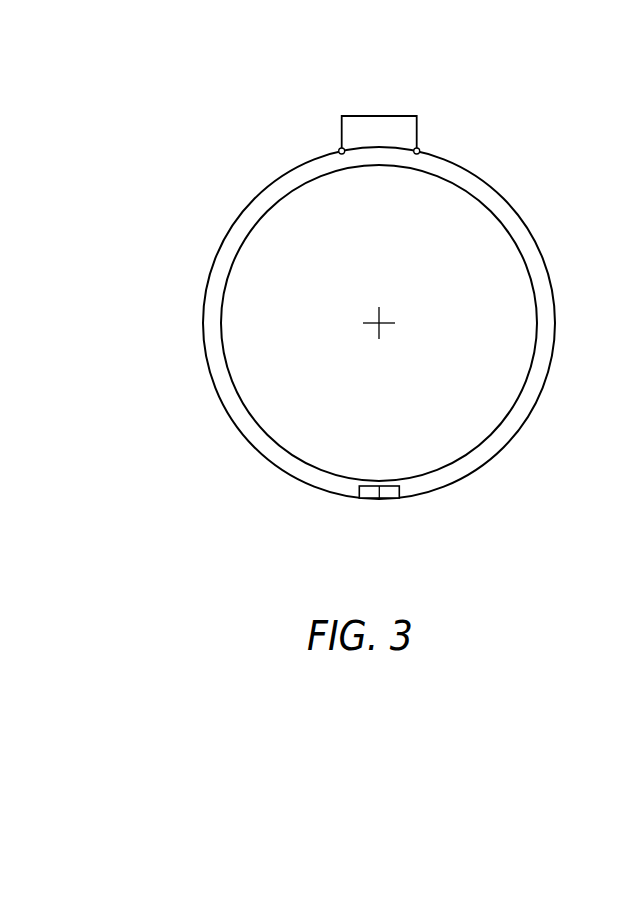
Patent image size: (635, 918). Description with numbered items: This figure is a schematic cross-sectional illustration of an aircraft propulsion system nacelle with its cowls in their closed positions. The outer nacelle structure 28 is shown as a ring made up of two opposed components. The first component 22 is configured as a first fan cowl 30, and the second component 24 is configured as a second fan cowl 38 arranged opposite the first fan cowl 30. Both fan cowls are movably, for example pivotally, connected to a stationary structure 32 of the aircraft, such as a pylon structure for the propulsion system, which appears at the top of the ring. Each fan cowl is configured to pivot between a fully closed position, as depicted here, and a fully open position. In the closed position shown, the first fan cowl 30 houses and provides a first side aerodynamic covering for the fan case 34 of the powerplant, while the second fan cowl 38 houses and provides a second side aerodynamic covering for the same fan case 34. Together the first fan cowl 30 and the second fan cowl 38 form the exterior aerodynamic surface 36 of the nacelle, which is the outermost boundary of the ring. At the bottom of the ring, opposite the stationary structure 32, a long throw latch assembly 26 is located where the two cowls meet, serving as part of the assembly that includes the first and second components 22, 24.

The first component 22 is at (273, 172).
The first fan cowl 30 is at (339, 323).
The exterior aerodynamic surface 36 is at (208, 280).
The second component 24 is at (508, 188).
The second fan cowl 38 is at (406, 323).
The fan case 34 is at (517, 242).
The outer nacelle structure 28 is at (440, 142).
The stationary structure 32 is at (380, 105).
The long throw latch assembly 26 is at (379, 503).